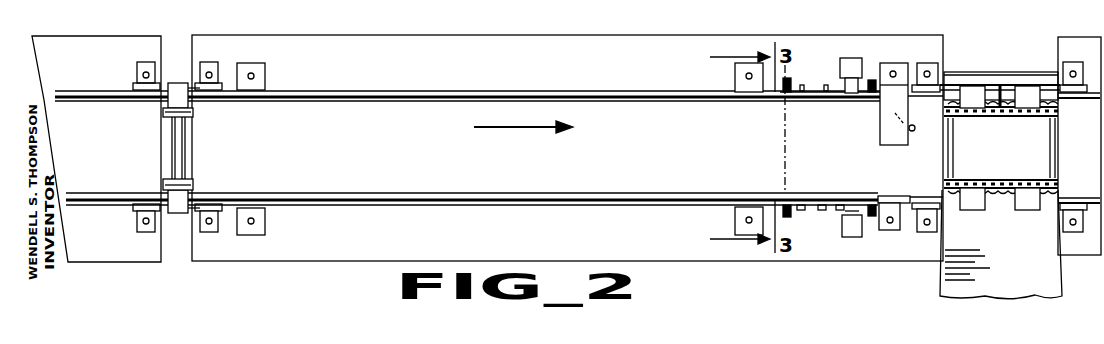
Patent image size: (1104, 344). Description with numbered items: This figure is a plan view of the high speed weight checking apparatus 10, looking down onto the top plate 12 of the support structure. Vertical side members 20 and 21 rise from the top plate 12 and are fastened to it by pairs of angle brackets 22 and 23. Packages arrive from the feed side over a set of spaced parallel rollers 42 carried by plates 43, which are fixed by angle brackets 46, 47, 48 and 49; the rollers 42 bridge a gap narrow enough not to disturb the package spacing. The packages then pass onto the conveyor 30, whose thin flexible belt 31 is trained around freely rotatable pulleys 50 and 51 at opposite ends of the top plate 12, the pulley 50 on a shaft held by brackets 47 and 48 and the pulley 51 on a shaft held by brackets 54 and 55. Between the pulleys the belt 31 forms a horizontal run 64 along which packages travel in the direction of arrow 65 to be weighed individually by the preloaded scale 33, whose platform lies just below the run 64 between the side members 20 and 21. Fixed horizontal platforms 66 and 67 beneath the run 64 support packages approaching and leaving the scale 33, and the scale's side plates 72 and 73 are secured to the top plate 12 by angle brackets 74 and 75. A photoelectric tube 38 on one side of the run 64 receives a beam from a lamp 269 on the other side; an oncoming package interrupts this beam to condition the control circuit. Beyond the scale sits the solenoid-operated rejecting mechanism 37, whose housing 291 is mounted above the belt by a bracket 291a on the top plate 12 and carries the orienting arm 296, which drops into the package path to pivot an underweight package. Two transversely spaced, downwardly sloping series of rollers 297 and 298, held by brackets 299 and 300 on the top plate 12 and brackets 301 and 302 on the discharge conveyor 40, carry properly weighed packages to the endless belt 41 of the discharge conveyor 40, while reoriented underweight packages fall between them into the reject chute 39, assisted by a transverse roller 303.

The high speed weight checking apparatus 10 is at (855, 28).
The top plate 12 is at (503, 60).
The vertical side member 20 is at (501, 195).
The vertical side member 21 is at (553, 90).
The angle brackets 22 is at (265, 72).
The angle brackets 23 is at (735, 76).
The conveyor 30 is at (610, 91).
The belt 31 is at (421, 147).
The scale 33 is at (846, 188).
The rejecting mechanism 37 is at (870, 110).
The photoelectric tube 38 is at (851, 58).
The reject chute 39 is at (1026, 296).
The discharge conveyor 40 is at (1062, 148).
The endless belt 41 is at (1089, 138).
The rollers 42 is at (170, 182).
The plates 43 is at (177, 97).
The angle bracket 46 is at (137, 70).
The angle bracket 47 is at (209, 64).
The angle bracket 48 is at (208, 229).
The angle bracket 49 is at (145, 228).
The pulley 50 is at (205, 97).
The pulley 51 is at (930, 98).
The angle bracket 54 is at (930, 63).
The angle bracket 55 is at (922, 233).
The horizontal run 64 is at (636, 134).
The arrow 65 is at (515, 128).
The fixed horizontal platform 66 is at (404, 100).
The fixed horizontal platform 67 is at (904, 176).
The side plate 72 is at (801, 197).
The side plate 73 is at (790, 103).
The angle bracket 74 is at (791, 90).
The angle bracket 75 is at (872, 80).
The lamp 269 is at (852, 238).
The housing 291 is at (890, 141).
The bracket 291a is at (893, 66).
The orienting arm 296 is at (909, 128).
The series of rollers 297 is at (968, 113).
The series of rollers 298 is at (1040, 181).
The bracket 299 is at (968, 87).
The bracket 300 is at (973, 210).
The bracket 301 is at (1035, 87).
The bracket 302 is at (1035, 210).
The transverse roller 303 is at (955, 136).